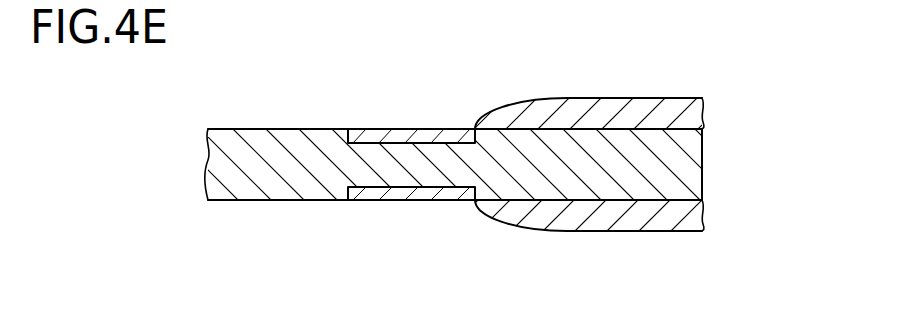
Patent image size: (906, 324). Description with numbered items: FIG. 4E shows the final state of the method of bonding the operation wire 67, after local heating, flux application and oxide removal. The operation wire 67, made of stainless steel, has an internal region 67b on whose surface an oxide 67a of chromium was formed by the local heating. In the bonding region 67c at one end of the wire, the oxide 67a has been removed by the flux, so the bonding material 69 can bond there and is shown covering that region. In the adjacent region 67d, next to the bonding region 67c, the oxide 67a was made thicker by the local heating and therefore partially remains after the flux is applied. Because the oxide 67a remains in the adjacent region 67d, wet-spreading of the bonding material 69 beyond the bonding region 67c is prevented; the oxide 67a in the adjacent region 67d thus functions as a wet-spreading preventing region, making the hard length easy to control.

The operation wire 67 is at (702, 164).
The oxide 67a is at (434, 194).
The internal region 67b is at (278, 200).
The bonding region 67c is at (702, 238).
The adjacent region 67d is at (348, 205).
The bonding material 69 is at (678, 108).